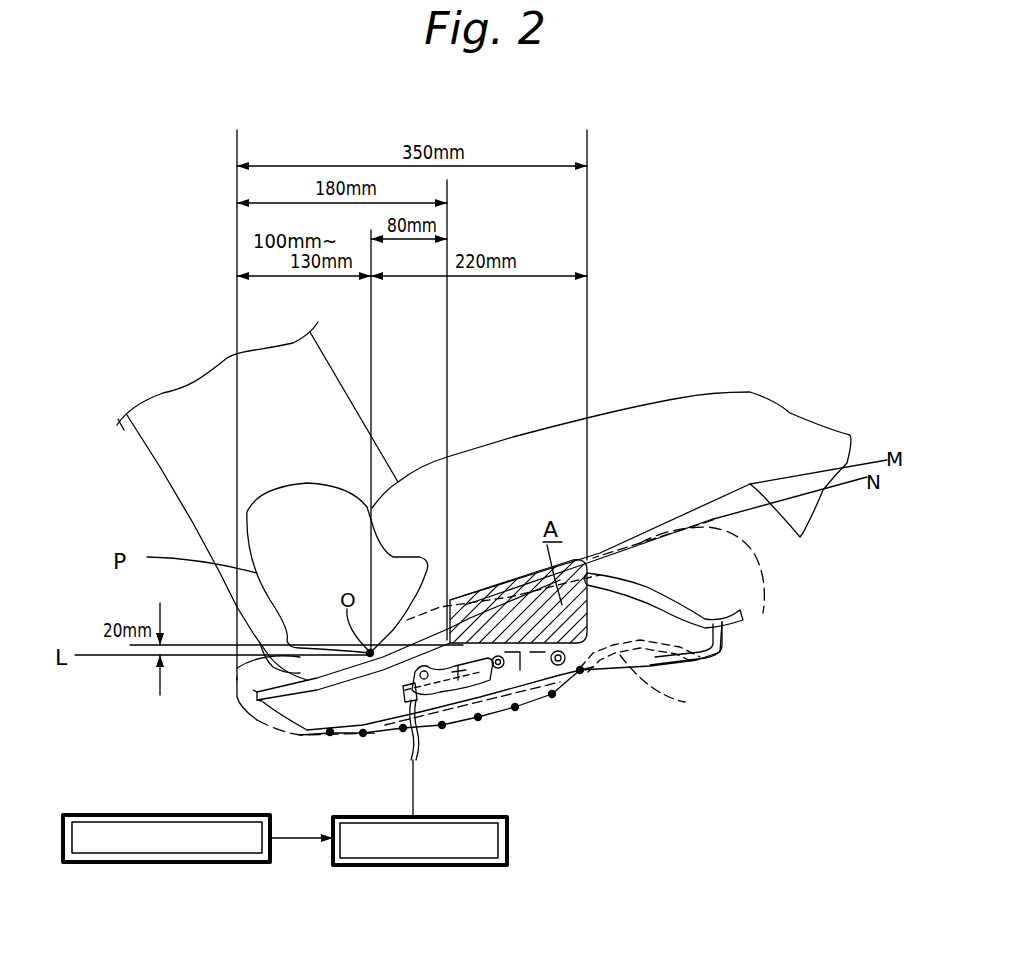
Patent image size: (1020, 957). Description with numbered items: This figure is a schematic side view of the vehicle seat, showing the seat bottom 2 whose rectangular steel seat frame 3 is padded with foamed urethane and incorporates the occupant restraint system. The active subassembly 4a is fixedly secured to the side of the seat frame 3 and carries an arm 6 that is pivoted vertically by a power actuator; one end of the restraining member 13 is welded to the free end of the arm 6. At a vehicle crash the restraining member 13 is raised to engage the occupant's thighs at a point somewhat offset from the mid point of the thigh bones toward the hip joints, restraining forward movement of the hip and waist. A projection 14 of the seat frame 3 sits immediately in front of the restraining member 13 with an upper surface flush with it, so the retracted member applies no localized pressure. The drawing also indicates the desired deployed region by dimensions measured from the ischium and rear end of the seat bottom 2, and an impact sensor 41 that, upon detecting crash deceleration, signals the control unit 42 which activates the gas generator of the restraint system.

The seat bottom 2 is at (764, 614).
The seat frame 3 is at (647, 580).
The active subassembly 4a is at (458, 702).
The arm 6 is at (532, 697).
The restraining member 13 is at (517, 607).
The projection 14 is at (665, 690).
The impact sensor 41 is at (163, 862).
The control unit 42 is at (407, 865).